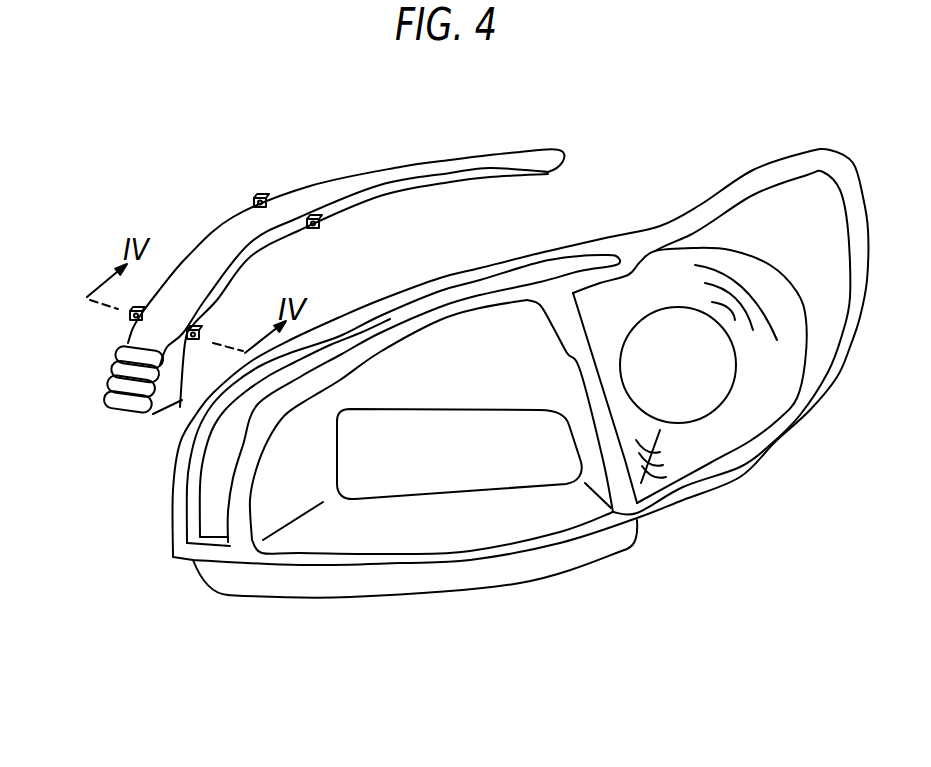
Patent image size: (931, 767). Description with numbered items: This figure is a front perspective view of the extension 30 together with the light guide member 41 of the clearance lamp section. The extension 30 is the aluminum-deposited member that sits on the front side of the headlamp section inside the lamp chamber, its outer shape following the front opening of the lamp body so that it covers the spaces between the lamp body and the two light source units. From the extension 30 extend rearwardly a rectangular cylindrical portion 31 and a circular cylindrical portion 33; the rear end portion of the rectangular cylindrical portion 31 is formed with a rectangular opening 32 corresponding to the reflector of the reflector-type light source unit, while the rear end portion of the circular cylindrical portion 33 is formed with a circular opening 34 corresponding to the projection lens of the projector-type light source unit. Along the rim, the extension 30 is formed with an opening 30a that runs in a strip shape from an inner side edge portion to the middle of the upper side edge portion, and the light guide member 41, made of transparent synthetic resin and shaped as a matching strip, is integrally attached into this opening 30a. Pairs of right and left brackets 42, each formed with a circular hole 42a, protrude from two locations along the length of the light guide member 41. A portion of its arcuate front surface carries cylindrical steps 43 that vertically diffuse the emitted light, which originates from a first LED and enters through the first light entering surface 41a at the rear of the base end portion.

The extension 30 is at (551, 560).
The opening 30a is at (222, 480).
The rectangular cylindrical portion 31 is at (290, 493).
The rectangular opening 32 is at (467, 500).
The circular cylindrical portion 33 is at (733, 430).
The circular opening 34 is at (725, 382).
The light guide member 41 is at (185, 230).
The first light entering surface 41a is at (128, 417).
The bracket 42 is at (260, 196).
The circular hole 42a is at (308, 237).
The cylindrical steps 43 is at (107, 385).